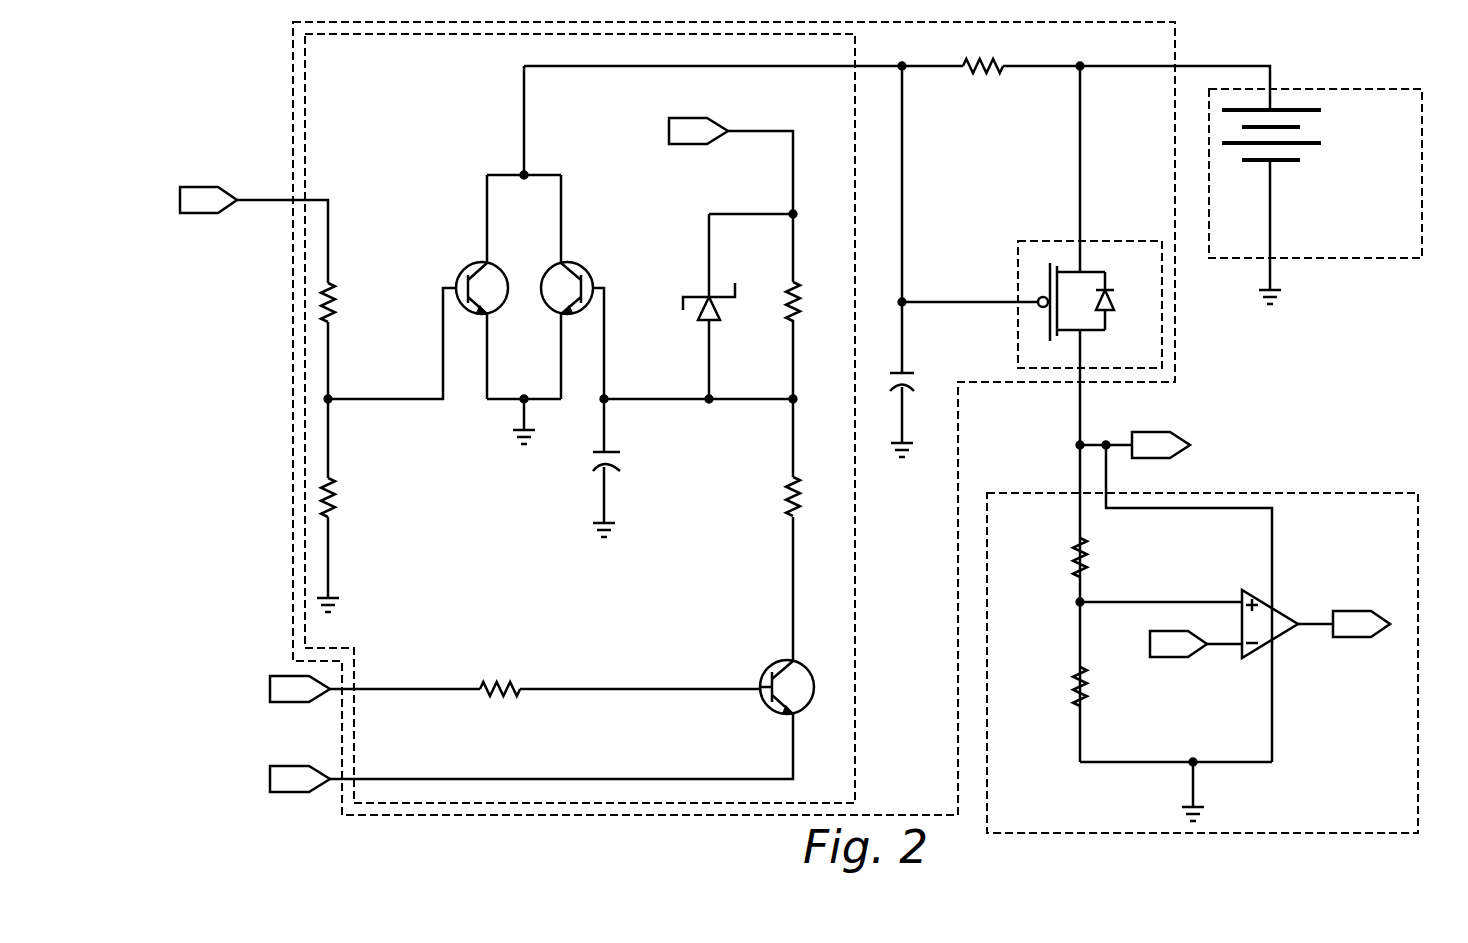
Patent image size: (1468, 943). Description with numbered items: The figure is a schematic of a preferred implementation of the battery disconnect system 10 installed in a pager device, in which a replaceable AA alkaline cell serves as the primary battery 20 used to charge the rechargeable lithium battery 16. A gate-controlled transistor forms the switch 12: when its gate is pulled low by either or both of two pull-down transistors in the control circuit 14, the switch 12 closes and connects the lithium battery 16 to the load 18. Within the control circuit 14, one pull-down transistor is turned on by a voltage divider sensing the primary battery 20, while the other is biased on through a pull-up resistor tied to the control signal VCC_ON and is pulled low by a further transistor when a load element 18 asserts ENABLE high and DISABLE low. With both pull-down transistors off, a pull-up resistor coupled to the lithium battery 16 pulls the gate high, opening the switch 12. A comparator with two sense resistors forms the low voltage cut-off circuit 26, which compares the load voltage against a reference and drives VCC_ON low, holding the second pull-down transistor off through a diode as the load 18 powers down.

The battery disconnect system 10 is at (1175, 36).
The switch 12 is at (1058, 241).
The control circuit 14 is at (855, 572).
The rechargeable lithium battery 16 is at (1347, 258).
The load 18 is at (1161, 458).
The primary battery 20 is at (206, 243).
The low voltage cut-off circuit 26 is at (1305, 493).